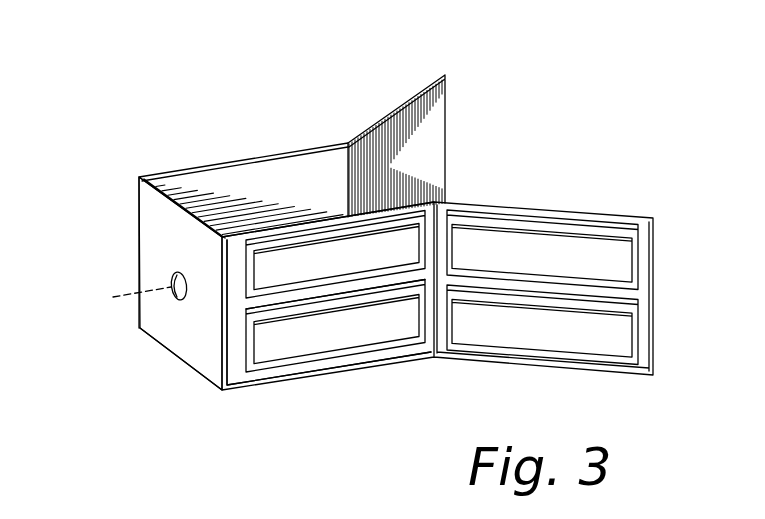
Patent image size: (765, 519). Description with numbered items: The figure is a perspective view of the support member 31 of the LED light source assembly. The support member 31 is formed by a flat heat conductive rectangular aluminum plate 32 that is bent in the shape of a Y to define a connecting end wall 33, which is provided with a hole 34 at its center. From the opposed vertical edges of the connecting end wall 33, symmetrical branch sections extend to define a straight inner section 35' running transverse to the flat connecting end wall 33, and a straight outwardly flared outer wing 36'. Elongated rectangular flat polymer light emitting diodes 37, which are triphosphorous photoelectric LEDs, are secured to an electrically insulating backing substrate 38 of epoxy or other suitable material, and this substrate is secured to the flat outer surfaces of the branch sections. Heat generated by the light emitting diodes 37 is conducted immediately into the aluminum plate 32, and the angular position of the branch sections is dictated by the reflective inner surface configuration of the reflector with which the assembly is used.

The support member 31 is at (118, 224).
The aluminum plate 32 is at (198, 192).
The connecting end wall 33 is at (183, 330).
The hole 34 is at (139, 300).
The straight inner section 35' is at (328, 163).
The outwardly flared outer wing 36' is at (447, 146).
The light emitting diodes 37 is at (327, 267).
The backing substrate 38 is at (252, 317).